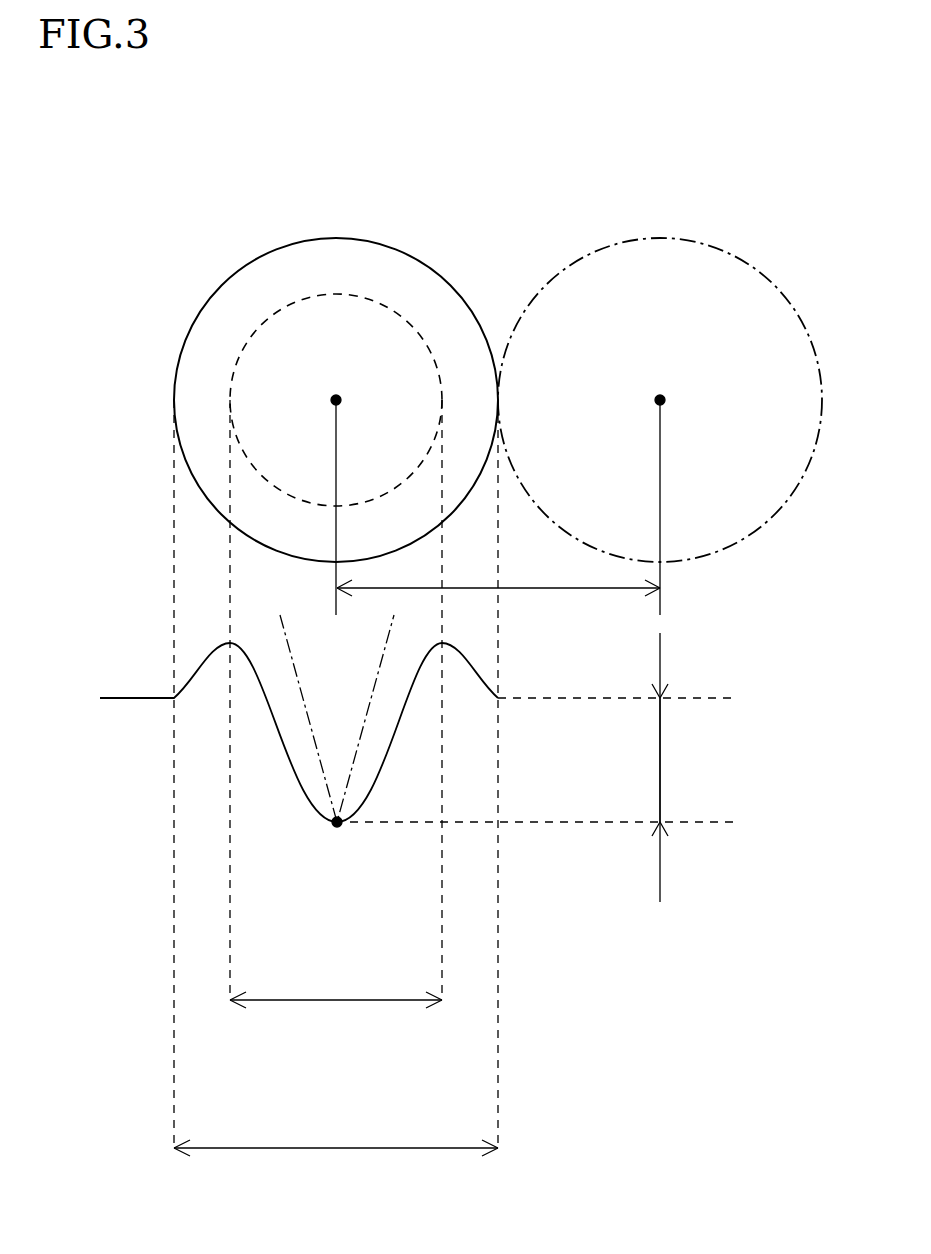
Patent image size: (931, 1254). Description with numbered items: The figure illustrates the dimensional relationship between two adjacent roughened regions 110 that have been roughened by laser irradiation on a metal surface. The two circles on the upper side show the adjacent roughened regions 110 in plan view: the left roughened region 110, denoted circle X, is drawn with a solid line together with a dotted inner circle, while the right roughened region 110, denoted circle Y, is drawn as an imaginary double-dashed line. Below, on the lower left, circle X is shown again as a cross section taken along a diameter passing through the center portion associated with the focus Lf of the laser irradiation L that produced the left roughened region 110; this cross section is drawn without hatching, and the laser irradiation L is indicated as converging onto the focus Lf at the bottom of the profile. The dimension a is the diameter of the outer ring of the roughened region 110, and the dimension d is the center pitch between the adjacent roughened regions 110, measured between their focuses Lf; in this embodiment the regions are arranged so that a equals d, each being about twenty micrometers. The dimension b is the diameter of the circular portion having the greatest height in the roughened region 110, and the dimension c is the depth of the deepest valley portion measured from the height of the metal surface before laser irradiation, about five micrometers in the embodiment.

The roughened region 110 is at (300, 272).
The circle X is at (405, 243).
The circle Y is at (607, 240).
The focus Lf is at (337, 398).
The laser irradiation L is at (305, 720).
The diameter of the outer ring a is at (336, 1136).
The diameter of the circular portion having the greatest height b is at (336, 988).
The depth of the valley portion c is at (677, 760).
The center pitch d is at (498, 606).